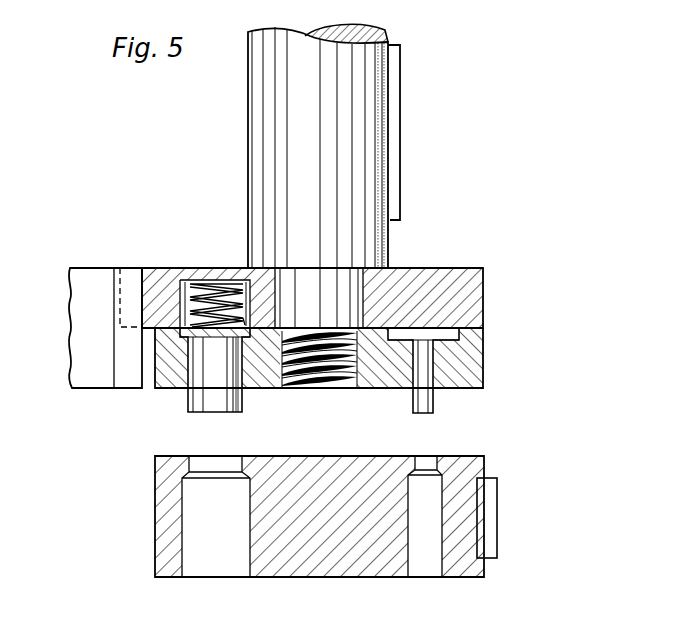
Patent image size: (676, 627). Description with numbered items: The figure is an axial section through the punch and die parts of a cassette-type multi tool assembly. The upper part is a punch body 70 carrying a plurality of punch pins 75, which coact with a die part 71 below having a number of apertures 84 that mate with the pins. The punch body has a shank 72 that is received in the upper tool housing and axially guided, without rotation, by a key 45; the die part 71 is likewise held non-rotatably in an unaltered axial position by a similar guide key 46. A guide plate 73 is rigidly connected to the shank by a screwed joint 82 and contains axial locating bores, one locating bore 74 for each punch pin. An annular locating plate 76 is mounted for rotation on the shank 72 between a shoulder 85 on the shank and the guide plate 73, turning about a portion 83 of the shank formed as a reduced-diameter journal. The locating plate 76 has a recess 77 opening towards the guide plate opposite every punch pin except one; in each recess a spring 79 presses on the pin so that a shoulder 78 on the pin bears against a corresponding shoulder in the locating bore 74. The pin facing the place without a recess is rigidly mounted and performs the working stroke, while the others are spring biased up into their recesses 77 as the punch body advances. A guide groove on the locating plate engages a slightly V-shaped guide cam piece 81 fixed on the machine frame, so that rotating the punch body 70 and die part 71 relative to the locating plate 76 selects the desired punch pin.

The key 45 is at (394, 142).
The guide key 46 is at (488, 519).
The punch body 70 is at (186, 184).
The die part 71 is at (128, 527).
The shank 72 is at (380, 240).
The guide plate 73 is at (468, 358).
The locating bore 74 is at (205, 378).
The punch pin 75 is at (425, 400).
The locating plate 76 is at (468, 290).
The recess 77 is at (215, 283).
The shoulder 78 is at (241, 396).
The spring 79 is at (196, 272).
The guide cam piece 81 is at (91, 280).
The screwed joint 82 is at (330, 352).
The journal portion 83 is at (298, 290).
The aperture 84 is at (428, 455).
The shoulder 85 is at (388, 270).